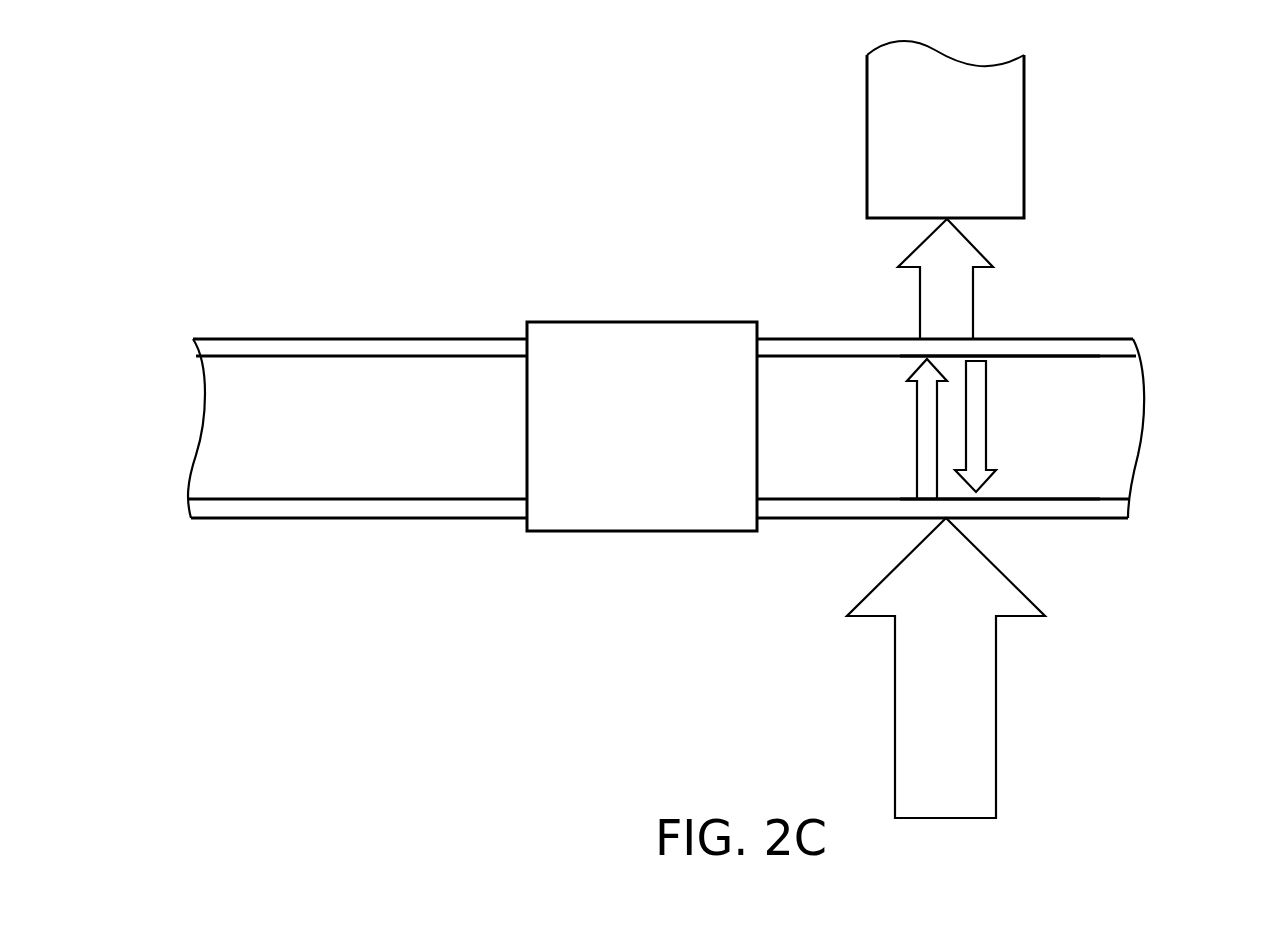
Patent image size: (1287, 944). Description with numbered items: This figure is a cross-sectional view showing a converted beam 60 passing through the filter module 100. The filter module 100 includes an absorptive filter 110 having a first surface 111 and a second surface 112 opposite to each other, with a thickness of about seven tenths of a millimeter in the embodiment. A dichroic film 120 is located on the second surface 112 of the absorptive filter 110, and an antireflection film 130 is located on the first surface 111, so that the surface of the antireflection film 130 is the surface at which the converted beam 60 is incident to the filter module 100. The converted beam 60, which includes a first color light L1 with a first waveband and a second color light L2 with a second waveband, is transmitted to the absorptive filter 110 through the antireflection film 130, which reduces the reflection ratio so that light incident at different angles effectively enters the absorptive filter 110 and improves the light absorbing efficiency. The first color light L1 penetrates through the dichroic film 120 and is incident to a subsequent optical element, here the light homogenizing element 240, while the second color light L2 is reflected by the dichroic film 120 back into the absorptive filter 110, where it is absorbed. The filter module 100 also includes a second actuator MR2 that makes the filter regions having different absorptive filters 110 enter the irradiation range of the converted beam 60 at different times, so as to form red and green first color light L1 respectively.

The filter module 100 is at (1281, 794).
The absorptive filter 110 is at (1123, 432).
The first surface 111 is at (1083, 499).
The second surface 112 is at (1083, 355).
The dichroic film 120 is at (1123, 352).
The antireflection film 130 is at (1123, 510).
The light homogenizing element 240 is at (1015, 137).
The converted beam 60 is at (985, 712).
The first color light L1 is at (958, 297).
The second color light L2 is at (925, 423).
The second actuator MR2 is at (654, 515).